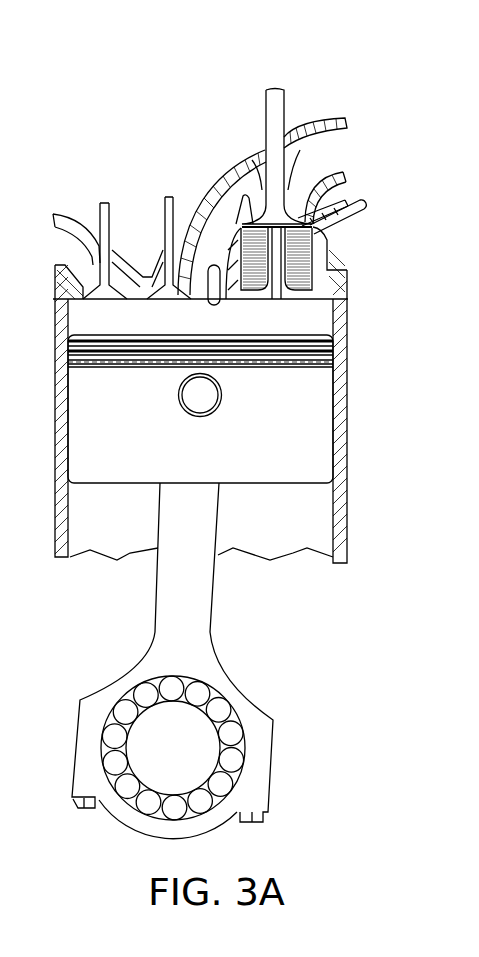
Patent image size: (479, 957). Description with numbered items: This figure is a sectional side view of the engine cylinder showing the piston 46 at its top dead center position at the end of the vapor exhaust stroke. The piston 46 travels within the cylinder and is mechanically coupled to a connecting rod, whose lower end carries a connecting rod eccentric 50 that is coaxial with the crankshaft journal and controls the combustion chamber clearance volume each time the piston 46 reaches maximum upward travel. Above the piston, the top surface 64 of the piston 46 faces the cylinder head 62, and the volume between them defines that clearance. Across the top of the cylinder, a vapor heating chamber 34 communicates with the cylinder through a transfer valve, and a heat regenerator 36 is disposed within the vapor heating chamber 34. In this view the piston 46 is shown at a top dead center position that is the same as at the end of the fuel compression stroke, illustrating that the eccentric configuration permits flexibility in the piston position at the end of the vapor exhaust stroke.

The vapor heating chamber 34 is at (304, 240).
The heat regenerator 36 is at (322, 249).
The piston 46 is at (218, 456).
The connecting rod eccentric 50 is at (255, 729).
The cylinder head 62 is at (138, 303).
The top surface of the piston 64 is at (218, 335).